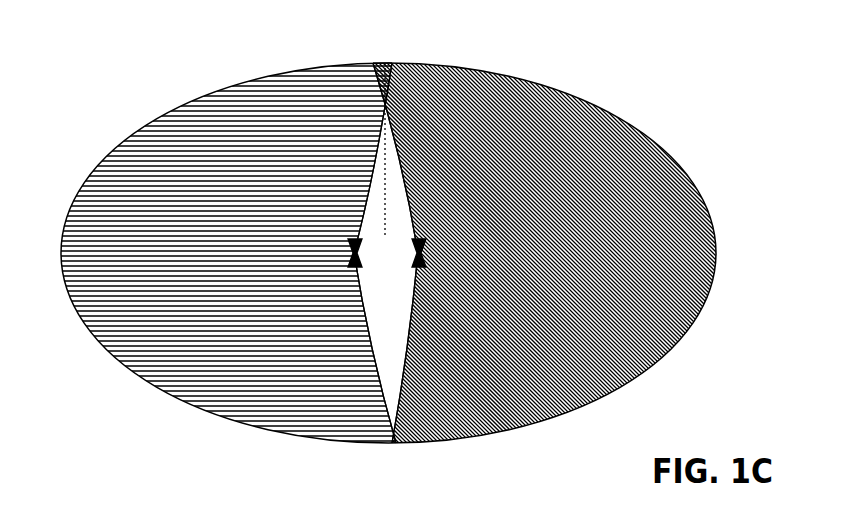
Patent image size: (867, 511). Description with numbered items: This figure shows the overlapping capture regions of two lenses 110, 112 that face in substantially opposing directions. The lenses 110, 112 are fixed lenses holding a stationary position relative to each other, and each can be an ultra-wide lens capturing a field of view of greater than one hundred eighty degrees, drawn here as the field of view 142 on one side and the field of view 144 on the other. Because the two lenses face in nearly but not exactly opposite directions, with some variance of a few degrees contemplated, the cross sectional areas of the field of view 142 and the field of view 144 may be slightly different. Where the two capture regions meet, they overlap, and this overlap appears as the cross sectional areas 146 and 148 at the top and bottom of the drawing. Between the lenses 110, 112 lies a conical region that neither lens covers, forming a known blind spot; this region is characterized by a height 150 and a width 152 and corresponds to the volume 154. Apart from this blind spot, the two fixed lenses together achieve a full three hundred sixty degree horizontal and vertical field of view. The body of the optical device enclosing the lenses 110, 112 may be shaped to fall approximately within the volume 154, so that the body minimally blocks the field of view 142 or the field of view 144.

The lens 110 is at (348, 254).
The lens 112 is at (428, 255).
The field of view 142 is at (223, 275).
The field of view 144 is at (602, 263).
The cross sectional area of overlap 146 is at (397, 446).
The cross sectional area of overlap 148 is at (380, 66).
The height 150 is at (388, 148).
The width 152 is at (409, 260).
The volume 154 is at (394, 340).